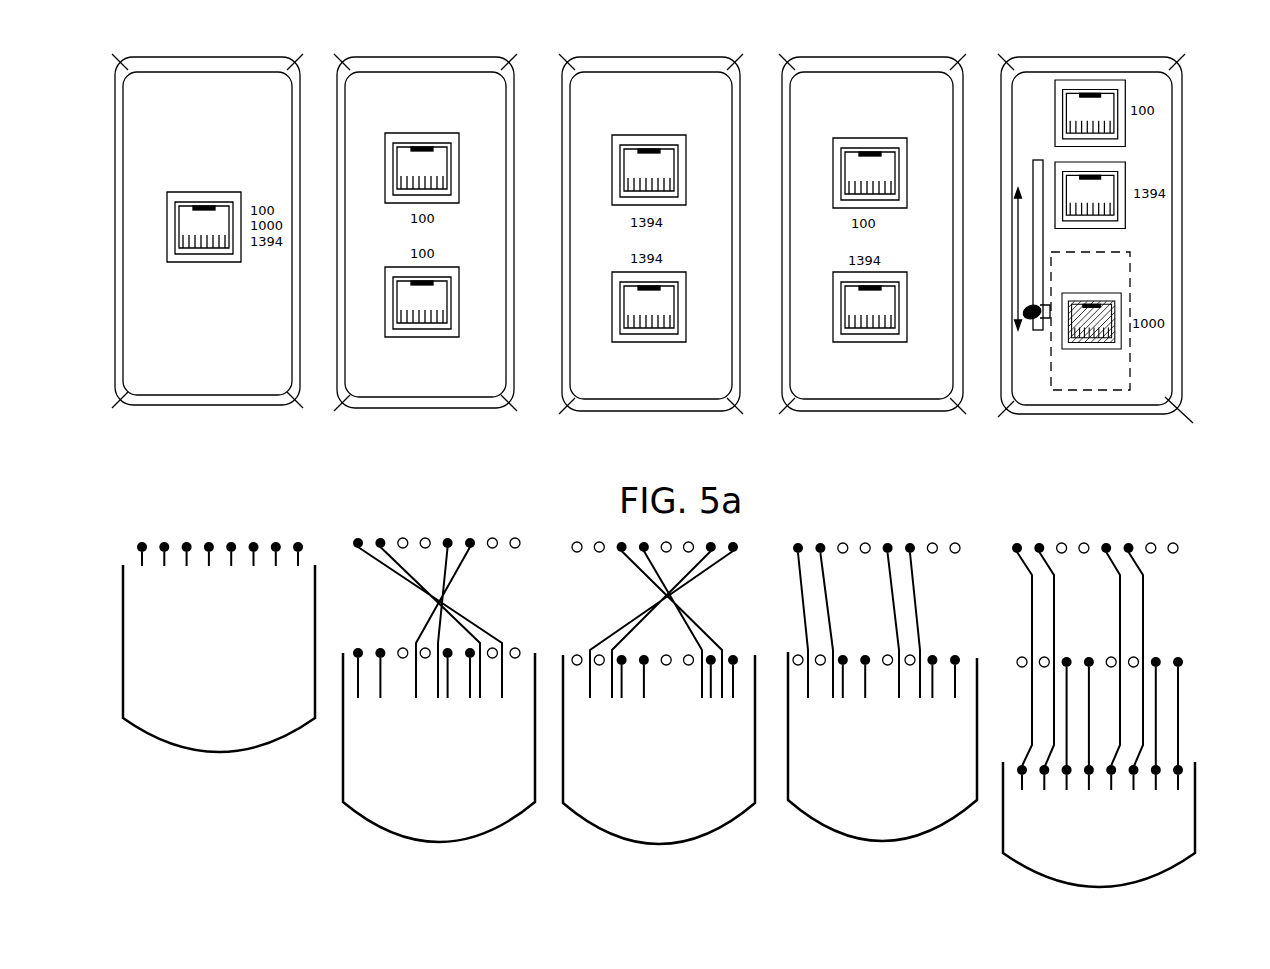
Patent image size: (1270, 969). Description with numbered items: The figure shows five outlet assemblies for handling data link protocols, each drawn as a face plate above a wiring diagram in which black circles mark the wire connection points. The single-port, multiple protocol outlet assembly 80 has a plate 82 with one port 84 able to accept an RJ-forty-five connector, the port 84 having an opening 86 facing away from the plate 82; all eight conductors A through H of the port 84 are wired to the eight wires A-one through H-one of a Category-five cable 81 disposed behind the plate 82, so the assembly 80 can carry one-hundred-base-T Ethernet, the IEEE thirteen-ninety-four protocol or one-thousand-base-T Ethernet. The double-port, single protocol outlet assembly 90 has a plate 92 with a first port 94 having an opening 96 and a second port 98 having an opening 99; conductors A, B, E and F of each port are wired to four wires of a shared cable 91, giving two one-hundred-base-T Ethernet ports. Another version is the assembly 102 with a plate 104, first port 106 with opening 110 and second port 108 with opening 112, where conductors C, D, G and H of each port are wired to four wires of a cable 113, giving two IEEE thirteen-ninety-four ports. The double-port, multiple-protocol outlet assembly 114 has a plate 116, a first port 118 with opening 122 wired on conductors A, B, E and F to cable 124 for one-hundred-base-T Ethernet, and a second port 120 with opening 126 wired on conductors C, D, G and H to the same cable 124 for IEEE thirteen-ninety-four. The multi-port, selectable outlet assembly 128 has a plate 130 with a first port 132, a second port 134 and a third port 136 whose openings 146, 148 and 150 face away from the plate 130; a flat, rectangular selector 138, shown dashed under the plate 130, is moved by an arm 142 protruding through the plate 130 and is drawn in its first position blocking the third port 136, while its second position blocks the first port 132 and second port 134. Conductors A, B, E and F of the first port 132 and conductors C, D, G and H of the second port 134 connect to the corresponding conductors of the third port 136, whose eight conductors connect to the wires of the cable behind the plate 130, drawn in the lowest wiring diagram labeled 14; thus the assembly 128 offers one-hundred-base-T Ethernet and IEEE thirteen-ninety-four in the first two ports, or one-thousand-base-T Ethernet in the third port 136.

The single-port, multiple protocol outlet assembly 80 is at (157, 415).
The plate 82 is at (229, 375).
The port 84 is at (196, 201).
The opening 86 is at (197, 218).
The double-port, single protocol outlet assembly 90 is at (386, 418).
The plate 92 is at (457, 375).
The first port 94 is at (442, 146).
The opening 96 is at (427, 153).
The second port 98 is at (442, 281).
The opening 99 is at (425, 290).
The double-port, single protocol outlet assembly 102 is at (615, 420).
The plate 104 is at (686, 378).
The first port 106 is at (668, 148).
The second port 108 is at (670, 280).
The opening 110 is at (658, 160).
The opening 112 is at (657, 300).
The double-port, multiple-protocol outlet assembly 114 is at (830, 420).
The plate 116 is at (902, 378).
The first port 118 is at (885, 153).
The second port 120 is at (890, 283).
The opening 122 is at (873, 165).
The opening 126 is at (867, 300).
The multi-port, selectable outlet assembly 128 is at (1055, 423).
The plate 130 is at (1138, 395).
The first port 132 is at (1111, 87).
The second port 134 is at (1141, 180).
The third port 136 is at (1114, 306).
The selector 138 is at (1112, 251).
The arm 142 is at (1033, 325).
The opening 146 is at (1087, 110).
The opening 148 is at (1092, 192).
The opening 150 is at (1107, 312).
The CAT5 cable 81 is at (222, 751).
The CAT5 cable 91 is at (405, 841).
The CAT5 cable 113 is at (680, 845).
The CAT5 cable 124 is at (890, 841).
The plug wiring diagram 14 is at (1196, 830).